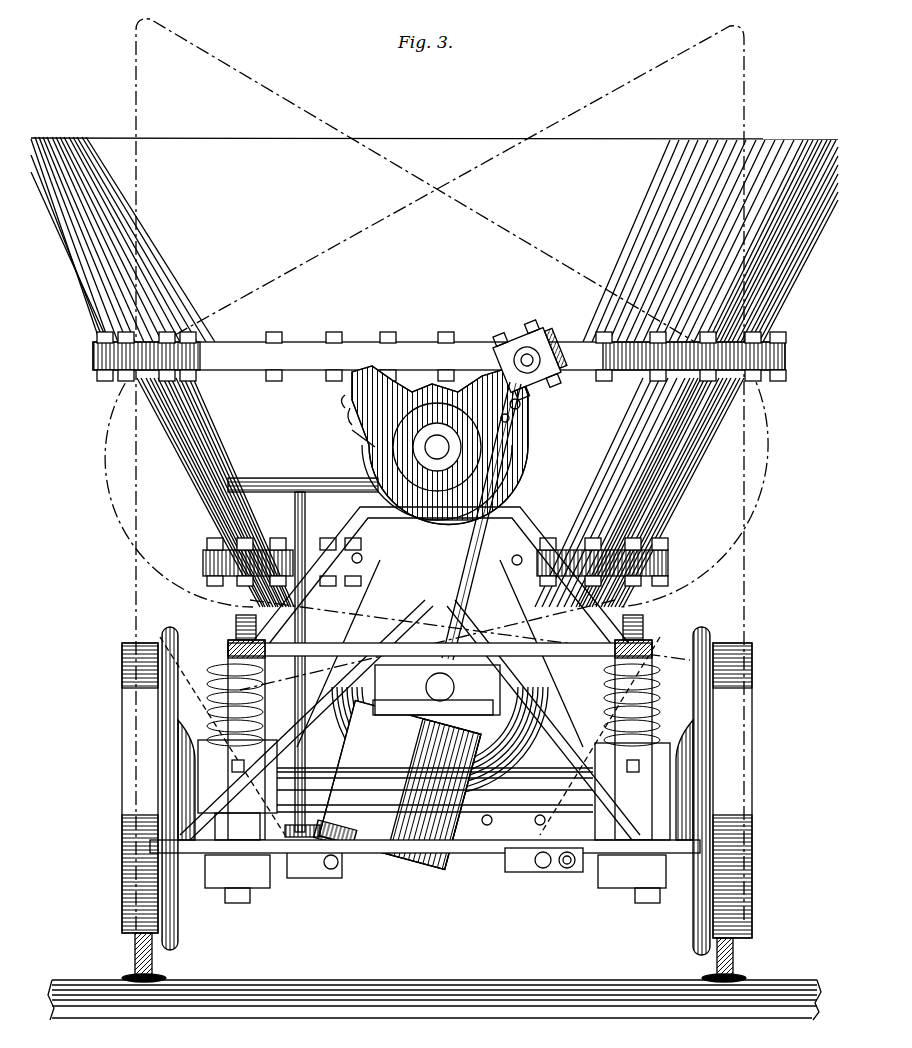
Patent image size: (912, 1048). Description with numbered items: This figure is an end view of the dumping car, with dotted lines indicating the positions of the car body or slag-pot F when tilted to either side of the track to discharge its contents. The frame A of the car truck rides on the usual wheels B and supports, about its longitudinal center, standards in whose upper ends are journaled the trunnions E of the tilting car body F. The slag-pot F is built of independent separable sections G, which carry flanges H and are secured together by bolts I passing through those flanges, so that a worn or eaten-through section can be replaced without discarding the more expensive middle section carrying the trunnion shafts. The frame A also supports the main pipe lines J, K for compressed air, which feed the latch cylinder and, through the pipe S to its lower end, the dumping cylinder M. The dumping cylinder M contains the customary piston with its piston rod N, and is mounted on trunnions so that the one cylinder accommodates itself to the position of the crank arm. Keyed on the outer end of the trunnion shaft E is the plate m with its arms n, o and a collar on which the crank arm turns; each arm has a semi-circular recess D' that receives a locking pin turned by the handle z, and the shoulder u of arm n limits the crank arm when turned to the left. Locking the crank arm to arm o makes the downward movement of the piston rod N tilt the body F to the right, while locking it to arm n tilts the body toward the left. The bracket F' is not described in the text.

The tilting car body or slag-pot F is at (434, 372).
The separable sections G is at (637, 608).
The flanges H is at (298, 341).
The bolts I is at (344, 338).
The bracket F' is at (530, 352).
The semi-circular recess D' is at (440, 442).
The shoulder u is at (345, 401).
The arm n is at (352, 418).
The plate m is at (380, 447).
The trunnions E is at (437, 447).
The handle z is at (519, 408).
The arm o is at (508, 423).
The piston rod N is at (500, 481).
The pipe S is at (333, 866).
The frame of the car truck A is at (430, 856).
The dumping cylinder M is at (396, 785).
The main pipe line J is at (537, 868).
The main pipe line K is at (566, 869).
The wheels B is at (431, 804).